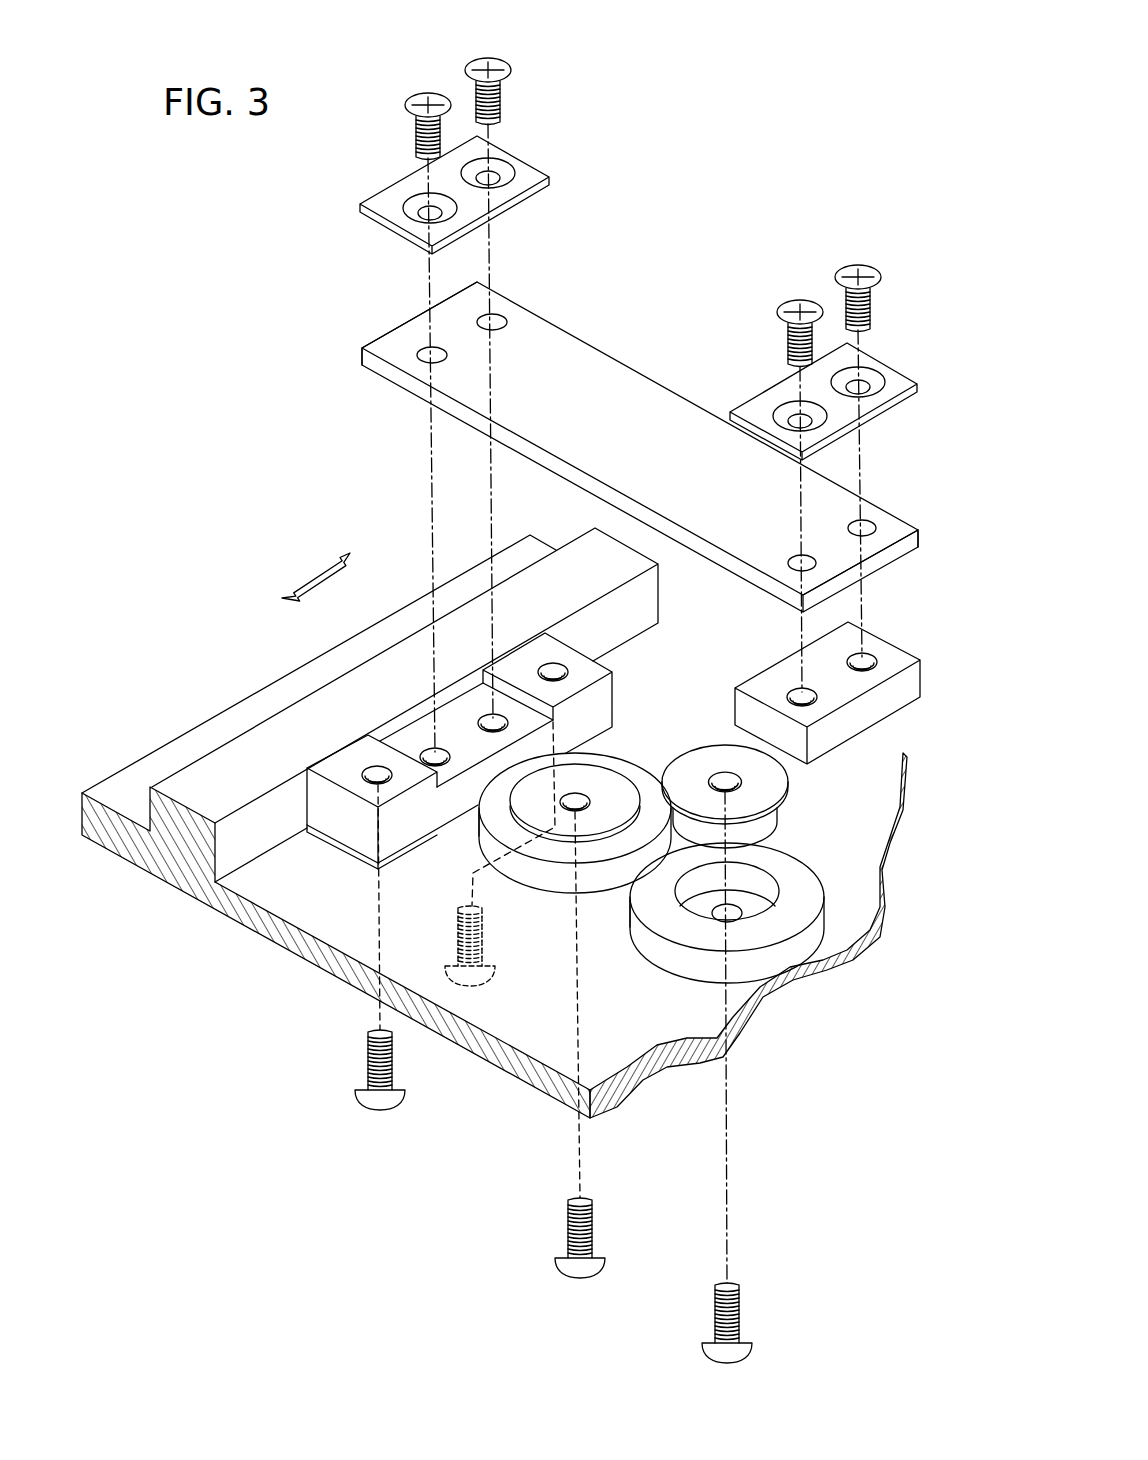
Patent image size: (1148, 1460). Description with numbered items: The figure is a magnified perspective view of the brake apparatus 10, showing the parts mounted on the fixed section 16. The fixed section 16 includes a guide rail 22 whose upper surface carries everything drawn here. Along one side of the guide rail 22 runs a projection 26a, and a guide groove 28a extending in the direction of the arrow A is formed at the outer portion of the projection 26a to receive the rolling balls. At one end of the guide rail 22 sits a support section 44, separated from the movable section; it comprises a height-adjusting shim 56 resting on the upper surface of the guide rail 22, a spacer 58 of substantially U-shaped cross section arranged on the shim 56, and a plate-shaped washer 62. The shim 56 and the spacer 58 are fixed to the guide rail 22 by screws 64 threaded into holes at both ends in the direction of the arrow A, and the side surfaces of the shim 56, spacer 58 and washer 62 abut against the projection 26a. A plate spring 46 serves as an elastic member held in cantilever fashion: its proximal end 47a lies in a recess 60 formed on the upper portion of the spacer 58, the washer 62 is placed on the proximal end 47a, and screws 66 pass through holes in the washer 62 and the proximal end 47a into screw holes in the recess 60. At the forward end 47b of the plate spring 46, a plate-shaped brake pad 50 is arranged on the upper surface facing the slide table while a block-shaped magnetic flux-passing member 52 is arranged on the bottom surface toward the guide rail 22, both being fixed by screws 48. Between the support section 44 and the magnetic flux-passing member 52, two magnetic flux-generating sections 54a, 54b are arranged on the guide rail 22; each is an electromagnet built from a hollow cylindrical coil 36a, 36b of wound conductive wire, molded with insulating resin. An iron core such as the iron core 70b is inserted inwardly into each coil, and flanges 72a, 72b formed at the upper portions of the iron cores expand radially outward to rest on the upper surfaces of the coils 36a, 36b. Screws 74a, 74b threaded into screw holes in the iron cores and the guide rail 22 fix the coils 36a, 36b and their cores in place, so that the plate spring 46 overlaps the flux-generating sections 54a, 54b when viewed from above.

The brake apparatus 10 is at (636, 260).
The fixed section 16 is at (783, 1010).
The guide rail 22 is at (298, 950).
The projection 26a is at (192, 790).
The guide groove 28a is at (153, 812).
The coil 36a is at (541, 878).
The coil 36b is at (708, 967).
The support section 44 is at (380, 730).
The plate spring 46 is at (570, 355).
The proximal end 47a is at (388, 350).
The forward end 47b is at (888, 520).
The screws 48 is at (800, 300).
The brake pad 50 is at (768, 412).
The magnetic flux-passing member 52 is at (787, 672).
The magnetic flux-generating section 54a is at (478, 852).
The magnetic flux-generating section 54b is at (645, 958).
The height-adjusting shim 56 is at (362, 857).
The spacer 58 is at (353, 830).
The recess 60 is at (455, 715).
The washer 62 is at (533, 172).
The screws 64 is at (392, 1132).
The screws 66 is at (428, 88).
The iron core 70b is at (760, 830).
The flange 72a is at (615, 785).
The flange 72b is at (710, 760).
The screw 74a is at (596, 1230).
The screw 74b is at (745, 1315).